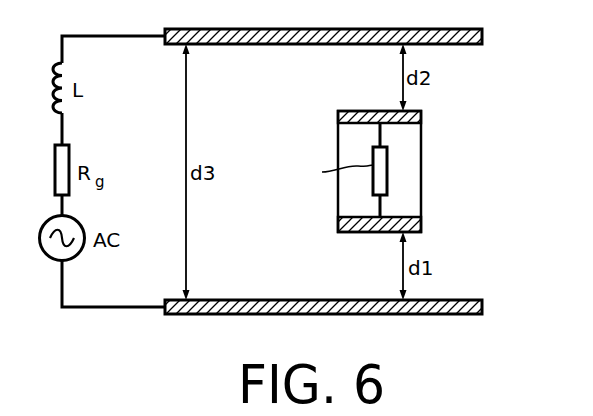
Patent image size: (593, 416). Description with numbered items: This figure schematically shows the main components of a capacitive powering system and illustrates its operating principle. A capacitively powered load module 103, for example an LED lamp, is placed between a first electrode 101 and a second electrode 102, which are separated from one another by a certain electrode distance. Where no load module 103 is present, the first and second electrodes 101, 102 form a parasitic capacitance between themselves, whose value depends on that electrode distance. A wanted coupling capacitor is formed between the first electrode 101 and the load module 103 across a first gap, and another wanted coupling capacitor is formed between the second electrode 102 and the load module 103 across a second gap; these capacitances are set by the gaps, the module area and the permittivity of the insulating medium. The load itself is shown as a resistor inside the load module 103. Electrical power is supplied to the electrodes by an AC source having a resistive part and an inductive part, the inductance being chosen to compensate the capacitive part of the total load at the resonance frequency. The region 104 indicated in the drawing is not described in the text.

The first electrode 101 is at (482, 305).
The second electrode 102 is at (482, 34).
The load module 103 is at (322, 121).
The gap region between plates 104 is at (496, 150).